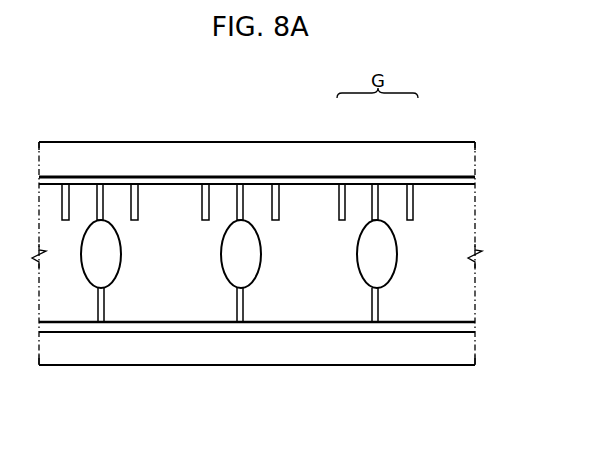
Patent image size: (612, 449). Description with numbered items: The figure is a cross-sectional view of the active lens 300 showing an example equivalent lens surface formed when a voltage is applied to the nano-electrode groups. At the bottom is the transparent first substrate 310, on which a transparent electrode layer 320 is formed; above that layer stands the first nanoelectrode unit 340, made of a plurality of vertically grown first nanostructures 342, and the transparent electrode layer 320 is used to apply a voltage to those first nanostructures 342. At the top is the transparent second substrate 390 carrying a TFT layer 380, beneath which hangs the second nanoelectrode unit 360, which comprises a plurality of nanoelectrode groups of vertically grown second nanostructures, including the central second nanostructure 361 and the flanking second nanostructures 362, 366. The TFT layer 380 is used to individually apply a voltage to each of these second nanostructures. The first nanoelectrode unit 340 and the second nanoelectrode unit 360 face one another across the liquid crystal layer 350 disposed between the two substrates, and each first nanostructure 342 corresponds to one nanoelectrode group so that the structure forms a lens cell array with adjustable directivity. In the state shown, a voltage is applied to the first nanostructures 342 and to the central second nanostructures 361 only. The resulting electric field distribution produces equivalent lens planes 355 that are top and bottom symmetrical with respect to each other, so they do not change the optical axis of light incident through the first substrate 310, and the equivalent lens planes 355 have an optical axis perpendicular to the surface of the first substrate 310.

The active lens 300 is at (482, 117).
The first substrate 310 is at (475, 348).
The transparent electrode layer 320 is at (475, 331).
The first nanoelectrode unit 340 is at (318, 344).
The first nanostructure 342 is at (244, 298).
The liquid crystal layer 350 is at (475, 233).
The equivalent lens plane 355 is at (397, 255).
The second nanoelectrode unit 360 is at (300, 161).
The central second nanostructure 361 is at (374, 197).
The second nanostructure 362 is at (337, 197).
The second nanostructure 366 is at (409, 197).
The TFT layer 380 is at (475, 183).
The second substrate 390 is at (475, 156).